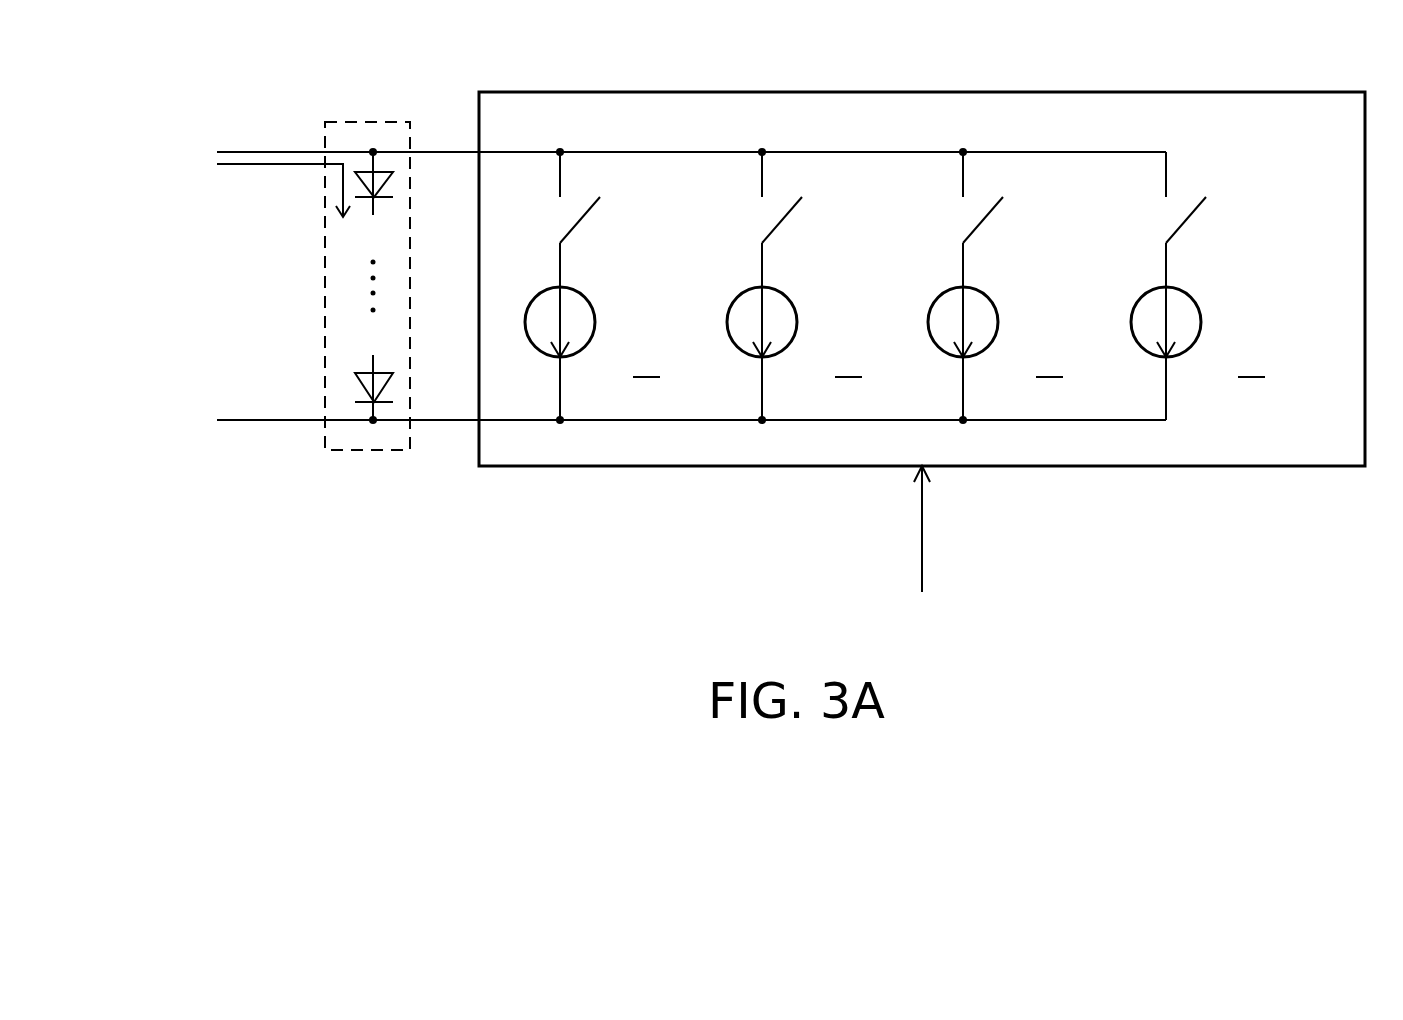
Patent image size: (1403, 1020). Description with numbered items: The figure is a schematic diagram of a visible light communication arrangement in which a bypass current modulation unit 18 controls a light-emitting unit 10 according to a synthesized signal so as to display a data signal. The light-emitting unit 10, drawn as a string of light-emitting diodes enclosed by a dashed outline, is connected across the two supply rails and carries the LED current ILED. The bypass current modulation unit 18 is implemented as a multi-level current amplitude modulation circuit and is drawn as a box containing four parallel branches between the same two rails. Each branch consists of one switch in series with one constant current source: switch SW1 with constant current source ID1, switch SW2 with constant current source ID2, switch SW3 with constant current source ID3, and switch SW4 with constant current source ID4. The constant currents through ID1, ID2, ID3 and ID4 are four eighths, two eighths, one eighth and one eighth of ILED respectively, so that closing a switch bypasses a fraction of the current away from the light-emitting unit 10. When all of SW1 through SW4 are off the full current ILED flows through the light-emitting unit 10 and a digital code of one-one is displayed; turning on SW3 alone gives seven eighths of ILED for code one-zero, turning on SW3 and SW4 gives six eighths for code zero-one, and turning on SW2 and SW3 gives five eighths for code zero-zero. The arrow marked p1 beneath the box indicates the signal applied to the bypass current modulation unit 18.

The light-emitting unit 10 is at (365, 120).
The bypass current modulation unit 18 is at (479, 90).
The switch SW1 is at (582, 225).
The switch SW2 is at (784, 225).
The switch SW3 is at (985, 225).
The switch SW4 is at (1188, 225).
The constant current source ID1 is at (595, 322).
The constant current source ID2 is at (797, 322).
The constant current source ID3 is at (998, 322).
The constant current source ID4 is at (1201, 322).
The LED current ILED is at (283, 190).
The first period p1 is at (938, 529).